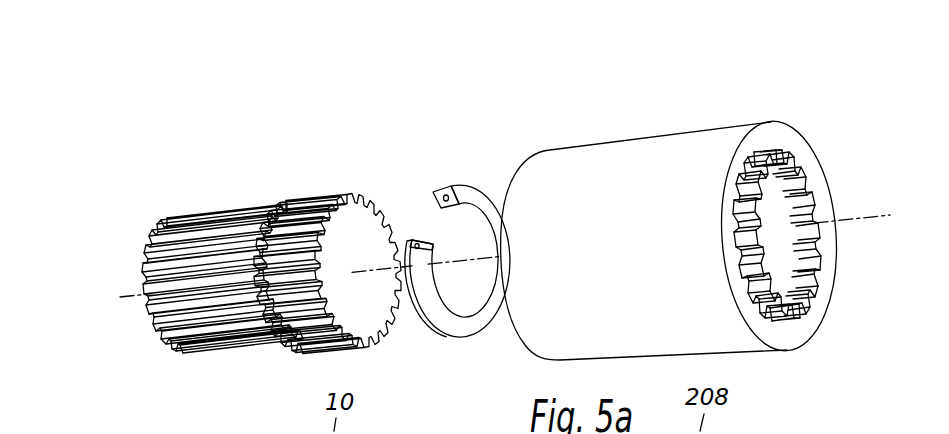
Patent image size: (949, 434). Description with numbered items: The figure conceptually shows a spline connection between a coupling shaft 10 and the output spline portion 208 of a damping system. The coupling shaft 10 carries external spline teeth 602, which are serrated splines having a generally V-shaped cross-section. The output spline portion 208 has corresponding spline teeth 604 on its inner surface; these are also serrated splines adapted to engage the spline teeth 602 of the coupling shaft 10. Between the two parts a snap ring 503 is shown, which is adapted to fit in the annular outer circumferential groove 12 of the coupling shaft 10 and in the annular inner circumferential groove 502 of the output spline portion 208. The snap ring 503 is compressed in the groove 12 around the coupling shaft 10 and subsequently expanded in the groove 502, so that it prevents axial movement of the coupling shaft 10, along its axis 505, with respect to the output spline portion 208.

The coupling shaft 10 is at (307, 136).
The annular outer circumferential groove 12 is at (274, 280).
The external spline teeth 602 is at (228, 203).
The axis 505 is at (130, 297).
The snap ring 503 is at (458, 337).
The output spline portion 208 is at (670, 89).
The spline teeth 604 is at (753, 170).
The annular inner circumferential groove 502 is at (805, 229).